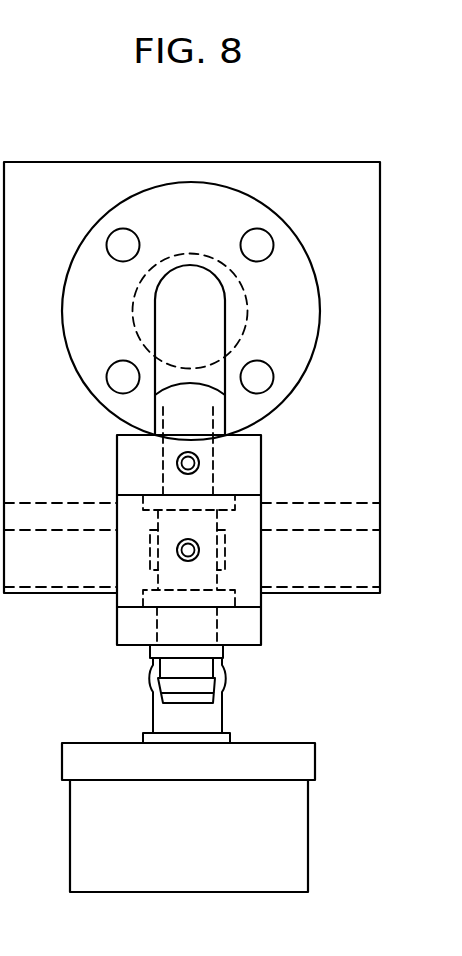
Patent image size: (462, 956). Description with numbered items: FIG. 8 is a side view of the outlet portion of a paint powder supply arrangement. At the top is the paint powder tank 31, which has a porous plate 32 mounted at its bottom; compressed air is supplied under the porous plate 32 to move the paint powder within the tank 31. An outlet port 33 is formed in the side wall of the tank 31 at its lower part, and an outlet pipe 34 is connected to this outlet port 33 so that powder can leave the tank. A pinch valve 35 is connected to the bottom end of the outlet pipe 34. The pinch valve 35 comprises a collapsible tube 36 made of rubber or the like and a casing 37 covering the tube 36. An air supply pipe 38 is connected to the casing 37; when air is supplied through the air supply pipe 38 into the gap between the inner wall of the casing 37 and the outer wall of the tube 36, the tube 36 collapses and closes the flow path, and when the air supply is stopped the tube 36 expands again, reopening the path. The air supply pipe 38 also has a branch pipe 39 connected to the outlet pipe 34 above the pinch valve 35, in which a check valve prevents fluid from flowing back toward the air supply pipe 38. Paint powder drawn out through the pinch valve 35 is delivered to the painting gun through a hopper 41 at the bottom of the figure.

The paint powder tank 31 is at (352, 229).
The porous plate 32 is at (363, 520).
The outlet port 33 is at (232, 276).
The outlet pipe 34 is at (208, 311).
The pinch valve 35 is at (268, 606).
The collapsible tube 36 is at (167, 527).
The casing 37 is at (248, 545).
The air supply pipe 38 is at (178, 550).
The branch pipe 39 is at (200, 465).
The hopper 41 is at (288, 843).